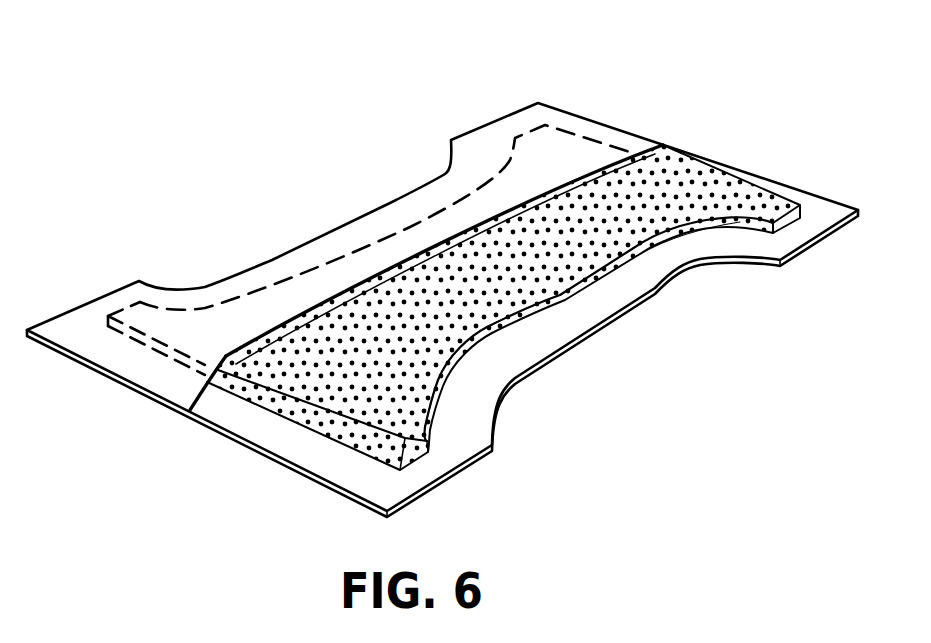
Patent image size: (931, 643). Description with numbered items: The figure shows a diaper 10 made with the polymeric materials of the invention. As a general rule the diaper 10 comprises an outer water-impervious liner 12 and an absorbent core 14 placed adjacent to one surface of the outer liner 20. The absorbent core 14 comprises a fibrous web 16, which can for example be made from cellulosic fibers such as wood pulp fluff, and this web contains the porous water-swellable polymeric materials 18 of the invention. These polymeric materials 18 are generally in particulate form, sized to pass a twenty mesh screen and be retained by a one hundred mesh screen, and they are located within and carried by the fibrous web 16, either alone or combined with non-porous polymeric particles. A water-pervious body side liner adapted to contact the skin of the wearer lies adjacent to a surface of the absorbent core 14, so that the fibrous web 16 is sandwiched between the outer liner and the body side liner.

The diaper 10 is at (442, 297).
The outer water-impervious liner 12 is at (703, 162).
The absorbent core 14 is at (552, 325).
The fibrous web 16 is at (448, 358).
The porous water-swellable polymeric materials 18 is at (648, 236).
The outer liner 20 is at (573, 147).